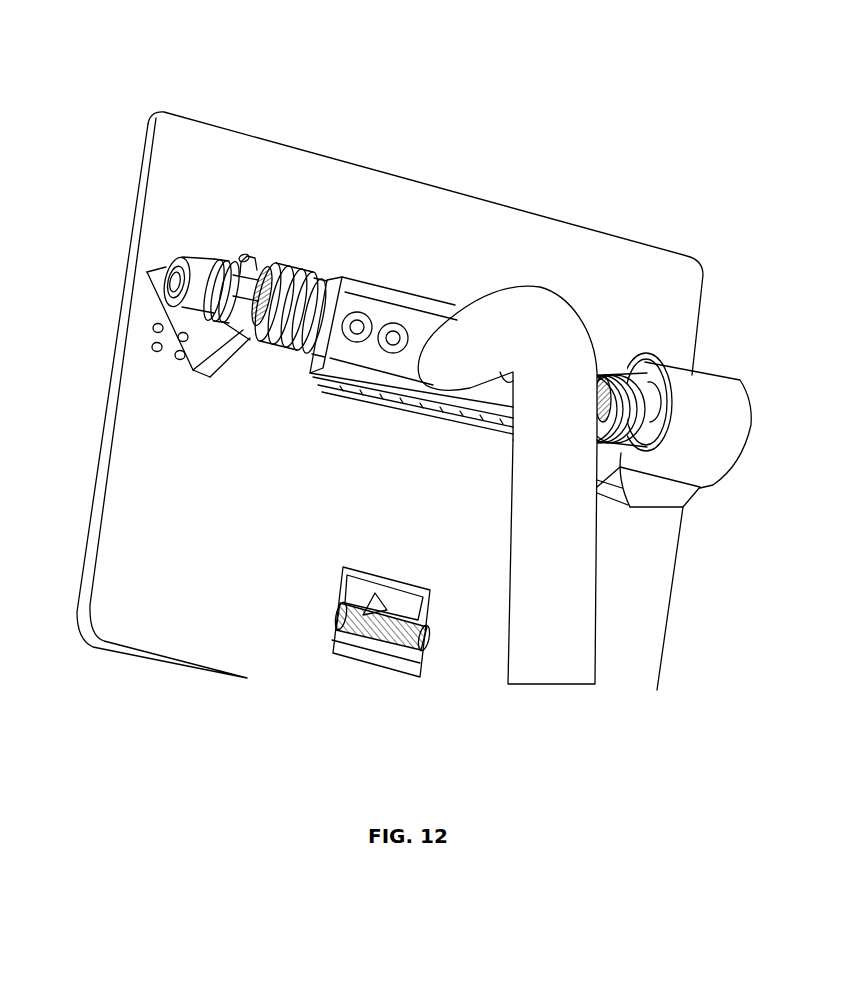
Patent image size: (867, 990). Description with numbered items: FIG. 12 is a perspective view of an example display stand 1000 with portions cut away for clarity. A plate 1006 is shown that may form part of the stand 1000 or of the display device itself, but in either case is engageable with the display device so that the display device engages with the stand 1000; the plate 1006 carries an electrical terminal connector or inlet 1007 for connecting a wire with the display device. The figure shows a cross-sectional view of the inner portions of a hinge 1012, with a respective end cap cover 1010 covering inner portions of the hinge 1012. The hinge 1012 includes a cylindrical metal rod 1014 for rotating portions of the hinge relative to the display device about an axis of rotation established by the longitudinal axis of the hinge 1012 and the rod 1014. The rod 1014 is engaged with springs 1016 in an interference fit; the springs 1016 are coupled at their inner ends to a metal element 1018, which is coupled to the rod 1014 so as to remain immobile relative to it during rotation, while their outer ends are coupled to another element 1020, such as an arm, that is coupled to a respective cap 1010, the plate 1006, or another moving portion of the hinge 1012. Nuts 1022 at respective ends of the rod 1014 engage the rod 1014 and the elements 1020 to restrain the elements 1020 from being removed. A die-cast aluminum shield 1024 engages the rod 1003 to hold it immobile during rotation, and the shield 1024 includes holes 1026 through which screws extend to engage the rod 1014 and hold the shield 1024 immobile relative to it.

The stand 1000 is at (625, 152).
The rod 1003 is at (512, 532).
The plate 1006 is at (670, 252).
The terminal connector or inlet 1007 is at (403, 580).
The end cap cover 1010 is at (738, 412).
The hinge 1012 is at (483, 282).
The metal rod 1014 is at (403, 309).
The springs 1016 is at (287, 267).
The element 1018 is at (306, 372).
The element 1020 is at (220, 338).
The nuts 1022 is at (202, 266).
The shield 1024 is at (355, 268).
The holes 1026 is at (393, 327).